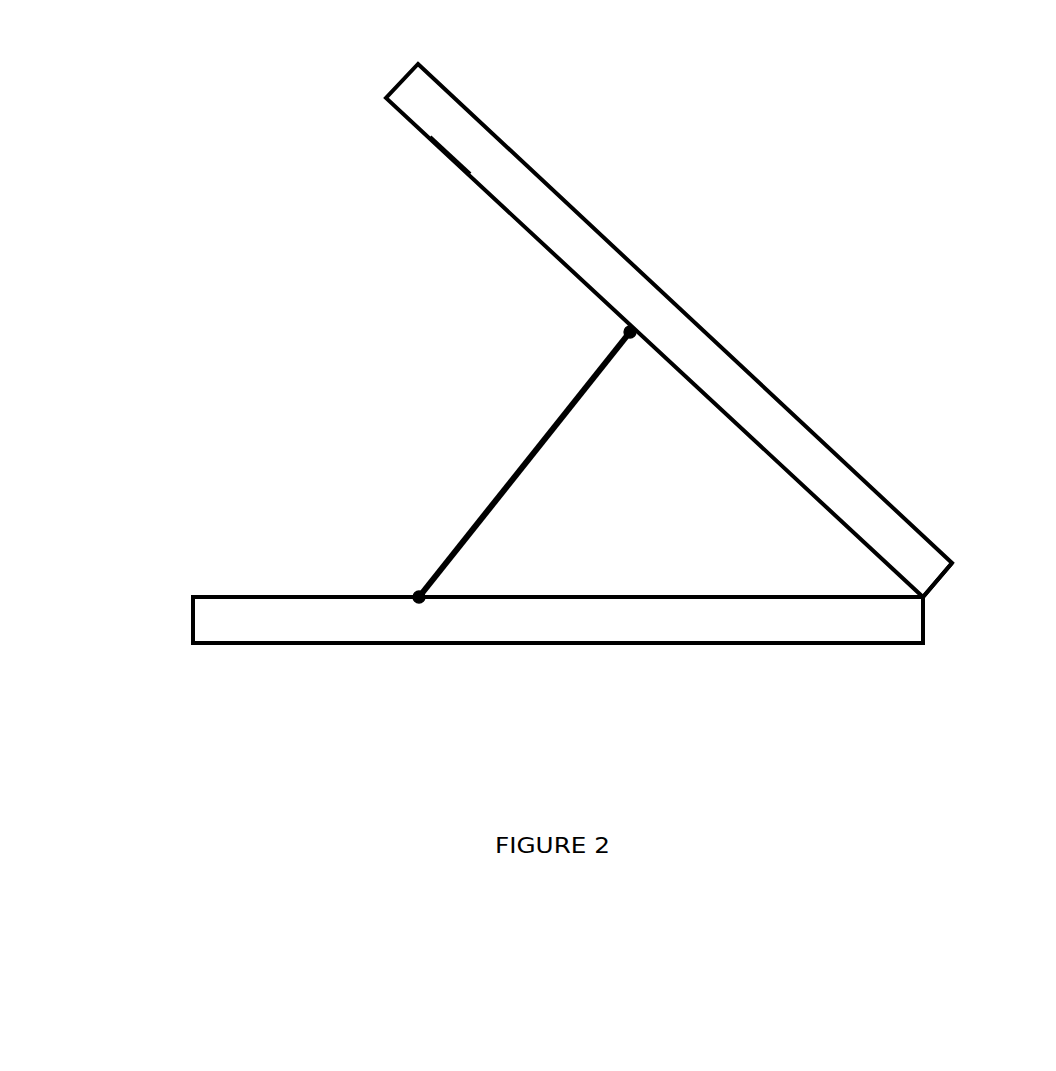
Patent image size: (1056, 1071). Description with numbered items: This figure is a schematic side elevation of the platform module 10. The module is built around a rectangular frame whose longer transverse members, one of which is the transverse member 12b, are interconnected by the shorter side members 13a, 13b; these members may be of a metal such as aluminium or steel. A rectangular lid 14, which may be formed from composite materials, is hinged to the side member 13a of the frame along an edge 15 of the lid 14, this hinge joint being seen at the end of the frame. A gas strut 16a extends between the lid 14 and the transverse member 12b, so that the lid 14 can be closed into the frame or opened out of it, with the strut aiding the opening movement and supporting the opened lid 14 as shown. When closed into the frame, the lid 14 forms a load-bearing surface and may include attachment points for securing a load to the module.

The platform module 10 is at (628, 250).
The lid 14 is at (455, 157).
The transverse member 12b is at (560, 645).
The side member 13a is at (190, 617).
The side member 13b is at (928, 627).
The edge 15 is at (928, 598).
The gas strut 16a is at (523, 463).